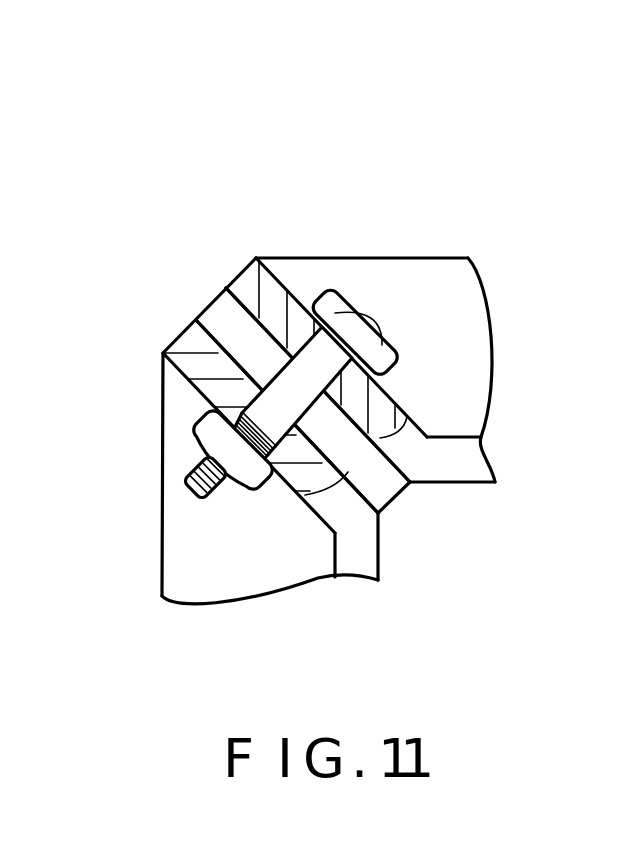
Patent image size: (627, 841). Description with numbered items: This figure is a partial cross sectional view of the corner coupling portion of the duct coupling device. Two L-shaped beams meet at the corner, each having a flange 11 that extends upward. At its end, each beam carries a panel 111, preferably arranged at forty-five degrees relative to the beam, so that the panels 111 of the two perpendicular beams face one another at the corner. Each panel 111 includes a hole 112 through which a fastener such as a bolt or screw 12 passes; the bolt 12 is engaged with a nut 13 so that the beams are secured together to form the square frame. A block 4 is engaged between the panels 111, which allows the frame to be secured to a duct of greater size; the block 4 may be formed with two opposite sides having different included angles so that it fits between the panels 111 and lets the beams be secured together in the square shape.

The block 4 is at (222, 323).
The flange 11 is at (413, 305).
The panel 111 is at (270, 305).
The hole 112 is at (312, 379).
The bolt 12 is at (352, 326).
The nut 13 is at (207, 427).